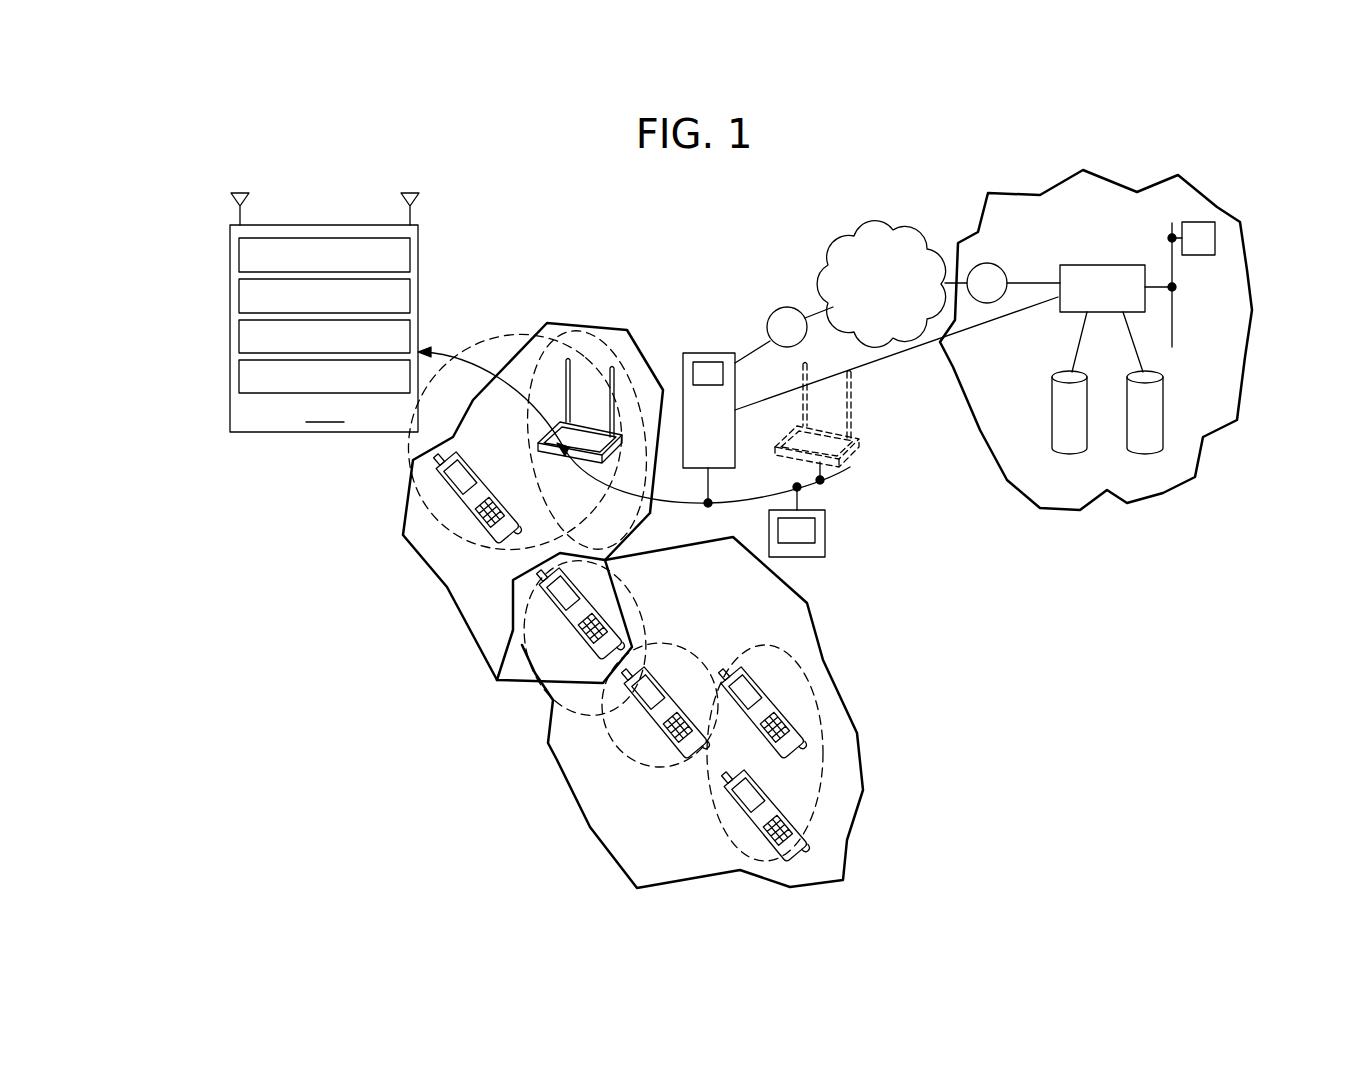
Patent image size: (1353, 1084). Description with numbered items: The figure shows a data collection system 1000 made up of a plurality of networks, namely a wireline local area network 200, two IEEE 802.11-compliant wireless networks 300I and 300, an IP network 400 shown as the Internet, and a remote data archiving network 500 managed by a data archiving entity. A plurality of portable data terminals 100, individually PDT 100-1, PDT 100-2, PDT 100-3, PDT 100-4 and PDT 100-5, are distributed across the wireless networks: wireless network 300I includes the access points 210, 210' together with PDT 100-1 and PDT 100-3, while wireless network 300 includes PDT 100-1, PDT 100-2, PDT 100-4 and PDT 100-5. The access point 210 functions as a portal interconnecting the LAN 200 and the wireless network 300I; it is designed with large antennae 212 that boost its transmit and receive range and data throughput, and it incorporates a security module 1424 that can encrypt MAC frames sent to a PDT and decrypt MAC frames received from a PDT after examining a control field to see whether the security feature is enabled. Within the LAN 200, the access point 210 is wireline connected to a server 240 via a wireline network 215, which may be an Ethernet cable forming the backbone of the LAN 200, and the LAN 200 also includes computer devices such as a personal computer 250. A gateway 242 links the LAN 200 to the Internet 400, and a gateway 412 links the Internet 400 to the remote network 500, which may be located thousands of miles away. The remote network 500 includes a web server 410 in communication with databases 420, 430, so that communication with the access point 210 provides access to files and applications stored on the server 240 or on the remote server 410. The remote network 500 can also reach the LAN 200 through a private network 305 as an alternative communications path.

The data collection system 1000 is at (692, 256).
The access point 210 is at (388, 356).
The security module 1424 is at (239, 297).
The antennae 212 is at (612, 366).
The wireline network 215 is at (664, 505).
The server 240 is at (736, 447).
The gateway 242 is at (768, 313).
The IP network 400 is at (878, 224).
The private network 305 is at (889, 360).
The gateway 412 is at (984, 264).
The web server 410 is at (1105, 265).
The database 420 is at (1052, 399).
The database 430 is at (1164, 408).
The remote data archiving network 500 is at (1123, 504).
The access point 210' is at (847, 426).
The personal computer 250 is at (826, 533).
The wireline local area network 200 is at (823, 573).
The wireless network 300I is at (458, 610).
The wireless network 300 is at (727, 871).
The portable data terminals 100 is at (607, 655).
The PDT 100-1 is at (604, 578).
The PDT 100-2 is at (668, 680).
The PDT 100-3 is at (418, 493).
The PDT 100-4 is at (776, 683).
The PDT 100-5 is at (723, 796).